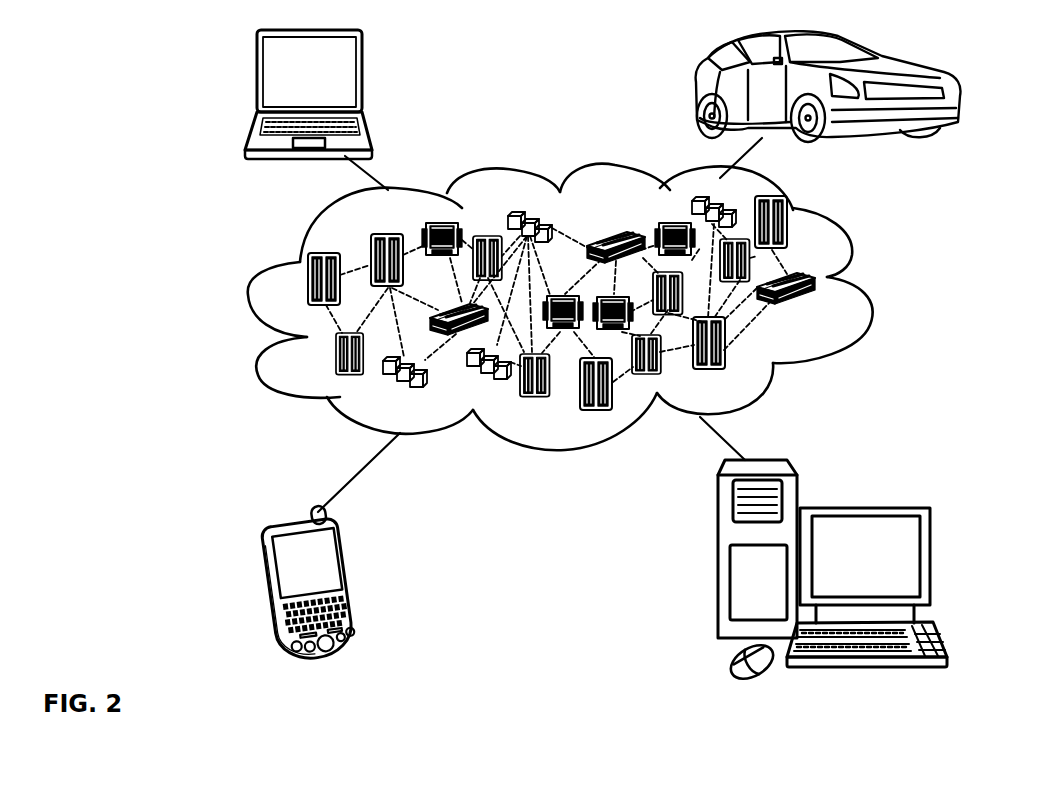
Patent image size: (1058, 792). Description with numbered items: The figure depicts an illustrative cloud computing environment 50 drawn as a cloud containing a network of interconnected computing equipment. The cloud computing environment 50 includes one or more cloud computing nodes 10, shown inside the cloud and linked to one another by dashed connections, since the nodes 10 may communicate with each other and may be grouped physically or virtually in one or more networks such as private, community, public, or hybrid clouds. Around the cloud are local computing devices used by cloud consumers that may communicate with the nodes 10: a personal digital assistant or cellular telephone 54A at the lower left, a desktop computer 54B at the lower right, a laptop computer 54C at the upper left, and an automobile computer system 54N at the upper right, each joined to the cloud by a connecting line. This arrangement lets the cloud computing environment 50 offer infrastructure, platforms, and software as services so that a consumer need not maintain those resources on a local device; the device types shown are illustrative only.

The cloud computing node 10 is at (826, 309).
The cloud computing environment 50 is at (858, 282).
The personal digital assistant or cellular telephone 54A is at (355, 579).
The desktop computer 54B is at (862, 508).
The laptop computer 54C is at (363, 78).
The automobile computer system 54N is at (698, 92).